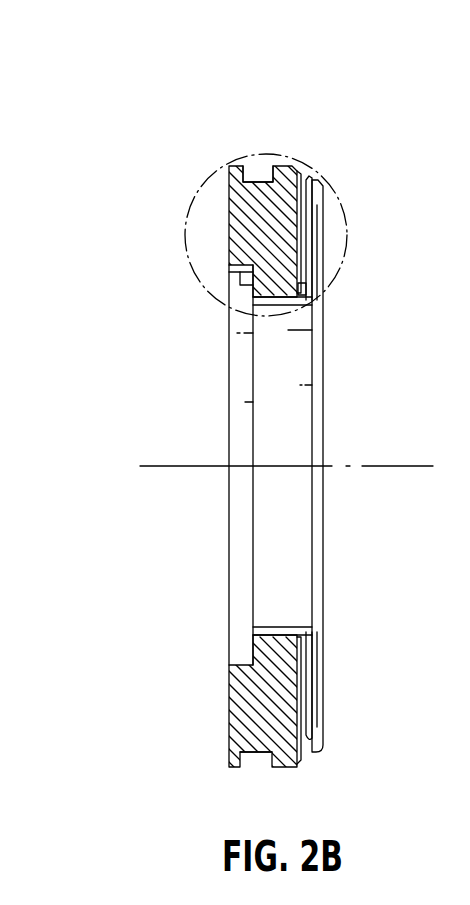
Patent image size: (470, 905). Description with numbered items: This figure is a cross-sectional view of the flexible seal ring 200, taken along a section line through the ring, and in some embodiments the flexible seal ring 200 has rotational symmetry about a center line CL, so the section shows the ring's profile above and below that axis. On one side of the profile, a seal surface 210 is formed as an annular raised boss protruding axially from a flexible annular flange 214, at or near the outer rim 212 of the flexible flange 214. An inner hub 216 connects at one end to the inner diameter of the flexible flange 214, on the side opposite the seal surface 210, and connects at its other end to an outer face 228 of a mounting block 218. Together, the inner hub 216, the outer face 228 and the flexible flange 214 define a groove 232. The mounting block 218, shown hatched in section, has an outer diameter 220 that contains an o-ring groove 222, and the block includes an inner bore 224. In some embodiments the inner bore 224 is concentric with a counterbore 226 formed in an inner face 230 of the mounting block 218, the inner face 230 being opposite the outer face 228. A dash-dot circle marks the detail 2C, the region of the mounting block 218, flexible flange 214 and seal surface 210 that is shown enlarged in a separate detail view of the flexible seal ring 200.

The flexible seal ring 200 is at (305, 112).
The seal surface 210 is at (323, 184).
The outer rim 212 is at (314, 176).
The flexible annular flange 214 is at (313, 238).
The inner hub 216 is at (312, 299).
The mounting block 218 is at (245, 212).
The outer diameter 220 is at (290, 170).
The o-ring groove 222 is at (270, 181).
The inner bore 224 is at (296, 306).
The counterbore 226 is at (250, 298).
The outer face 228 is at (306, 285).
The inner face 230 is at (229, 250).
The groove 232 is at (303, 742).
The detail 2C is at (187, 229).
The center line CL is at (410, 466).